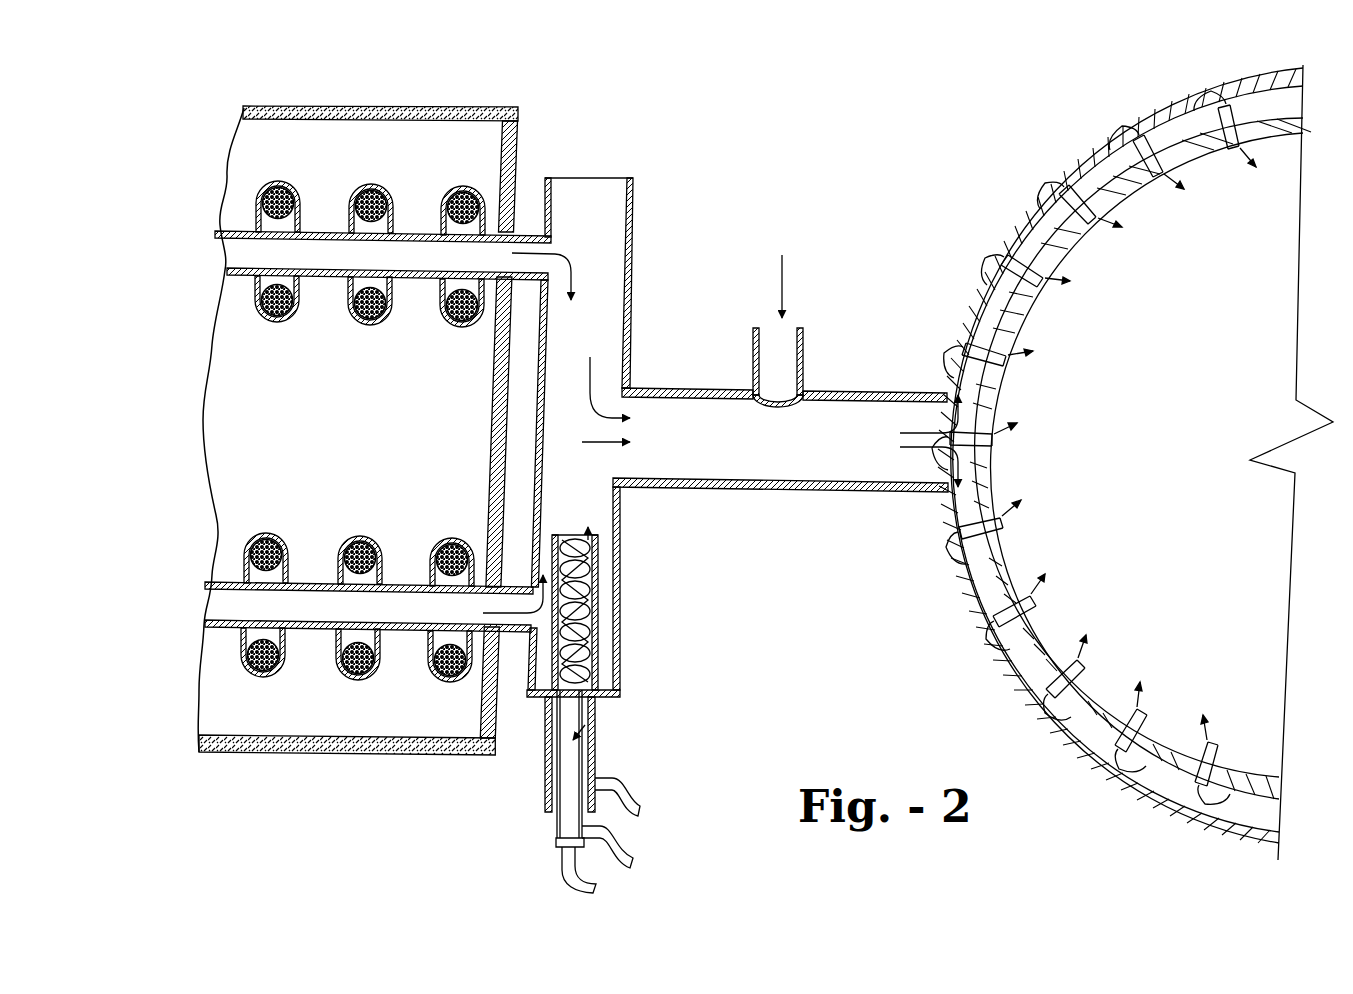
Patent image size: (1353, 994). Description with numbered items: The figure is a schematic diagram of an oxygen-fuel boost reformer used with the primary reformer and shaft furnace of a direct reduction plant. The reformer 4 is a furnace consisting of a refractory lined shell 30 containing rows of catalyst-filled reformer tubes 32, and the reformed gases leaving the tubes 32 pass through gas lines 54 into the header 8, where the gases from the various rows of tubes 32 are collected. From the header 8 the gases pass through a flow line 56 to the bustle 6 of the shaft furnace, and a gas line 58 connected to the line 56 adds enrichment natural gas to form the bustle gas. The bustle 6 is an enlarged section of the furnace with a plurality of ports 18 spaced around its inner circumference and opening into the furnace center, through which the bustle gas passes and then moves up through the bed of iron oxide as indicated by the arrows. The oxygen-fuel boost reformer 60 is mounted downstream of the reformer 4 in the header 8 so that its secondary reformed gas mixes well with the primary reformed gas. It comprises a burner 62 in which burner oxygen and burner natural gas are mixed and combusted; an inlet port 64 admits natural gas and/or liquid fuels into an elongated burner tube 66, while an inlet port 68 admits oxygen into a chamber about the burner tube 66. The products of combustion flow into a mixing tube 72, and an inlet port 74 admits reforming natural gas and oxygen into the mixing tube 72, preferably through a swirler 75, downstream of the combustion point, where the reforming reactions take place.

The reformer 4 is at (522, 136).
The refractory lined shell 30 is at (492, 108).
The catalyst-filled reformer tubes 32 is at (288, 187).
The gas lines 54 is at (435, 262).
The header 8 is at (637, 200).
The flow line 56 is at (742, 462).
The gas line 58 is at (756, 355).
The bustle 6 is at (1000, 222).
The ports 18 is at (1155, 162).
The mixing tube 72 is at (598, 630).
The swirler 75 is at (552, 703).
The oxygen-fuel boost reformer 60 is at (543, 776).
The burner 62 is at (592, 729).
The burner tube 66 is at (560, 846).
The inlet port 64 is at (566, 860).
The inlet port 74 is at (601, 779).
The inlet port 68 is at (600, 833).